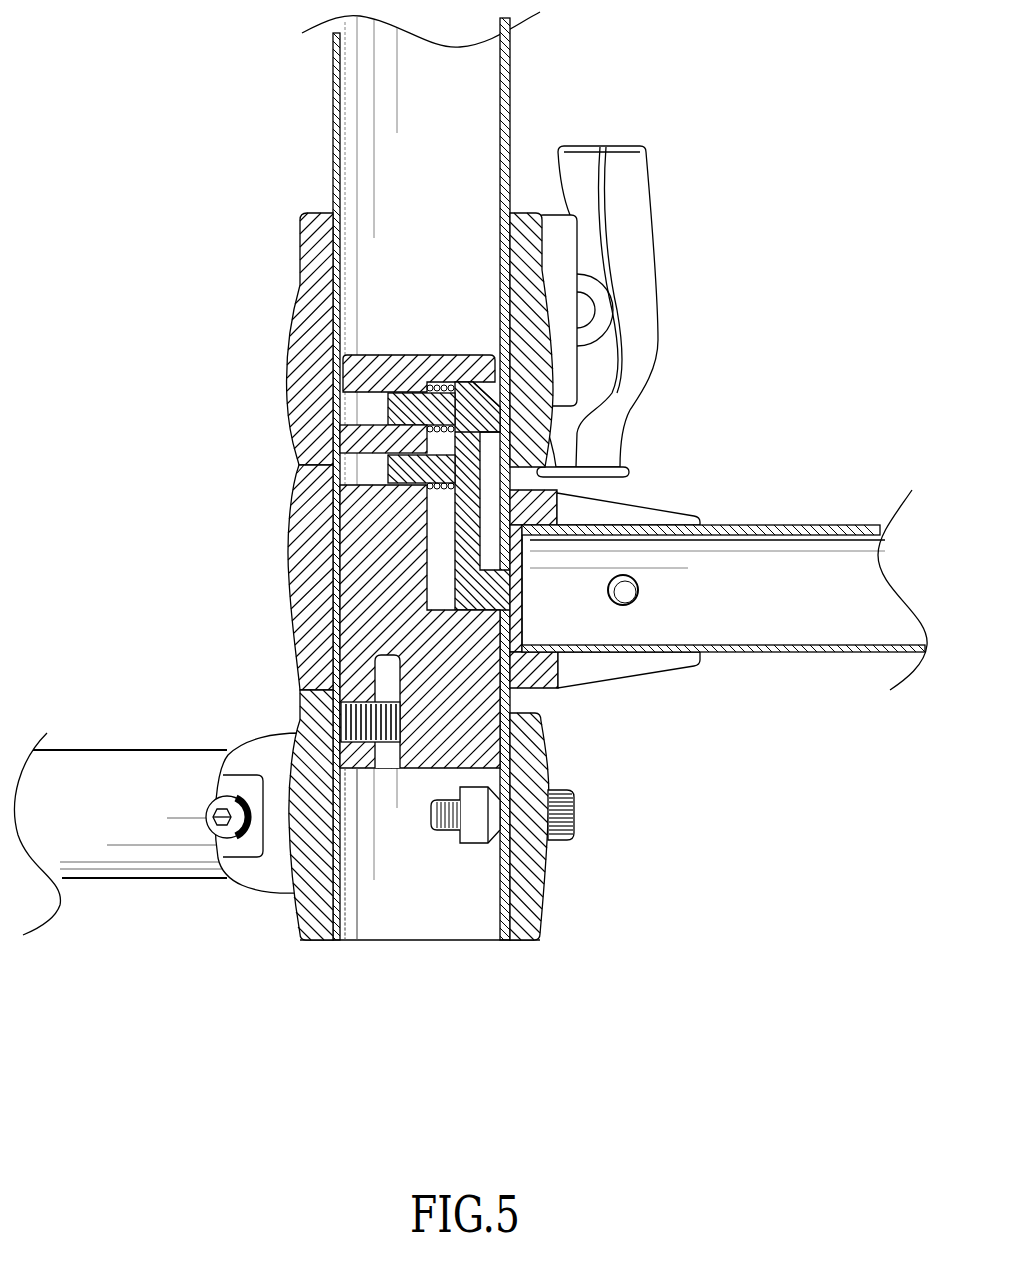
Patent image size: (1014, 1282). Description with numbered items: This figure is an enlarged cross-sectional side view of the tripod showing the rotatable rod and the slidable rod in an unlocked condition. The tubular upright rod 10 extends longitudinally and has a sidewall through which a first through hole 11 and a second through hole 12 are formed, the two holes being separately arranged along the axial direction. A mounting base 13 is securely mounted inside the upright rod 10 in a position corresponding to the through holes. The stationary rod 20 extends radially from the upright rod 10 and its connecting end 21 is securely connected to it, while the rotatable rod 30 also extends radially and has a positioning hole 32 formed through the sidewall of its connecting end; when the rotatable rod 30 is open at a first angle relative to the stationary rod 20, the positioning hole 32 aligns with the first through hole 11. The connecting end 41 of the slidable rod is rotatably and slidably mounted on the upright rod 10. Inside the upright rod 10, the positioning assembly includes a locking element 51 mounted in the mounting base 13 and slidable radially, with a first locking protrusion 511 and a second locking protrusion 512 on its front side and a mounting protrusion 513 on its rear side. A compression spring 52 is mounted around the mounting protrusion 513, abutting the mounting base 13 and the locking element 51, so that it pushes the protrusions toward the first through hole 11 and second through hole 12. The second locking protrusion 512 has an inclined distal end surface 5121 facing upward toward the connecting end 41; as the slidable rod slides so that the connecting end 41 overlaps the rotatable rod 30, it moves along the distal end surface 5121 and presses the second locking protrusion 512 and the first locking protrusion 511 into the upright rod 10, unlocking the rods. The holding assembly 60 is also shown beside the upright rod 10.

The upright rod 10 is at (333, 113).
The first through hole 11 is at (515, 622).
The second through hole 12 is at (545, 390).
The mounting base 13 is at (362, 567).
The stationary rod 20 is at (131, 872).
The connecting end 21 is at (297, 880).
The rotatable rod 30 is at (758, 630).
The positioning hole 32 is at (520, 585).
The connecting end 41 is at (308, 322).
The locking element 51 is at (505, 490).
The compression spring 52 is at (428, 430).
The holding assembly 60 is at (668, 230).
The first locking protrusion 511 is at (514, 650).
The second locking protrusion 512 is at (483, 393).
The mounting protrusion 513 is at (408, 400).
The distal end surface 5121 is at (515, 385).